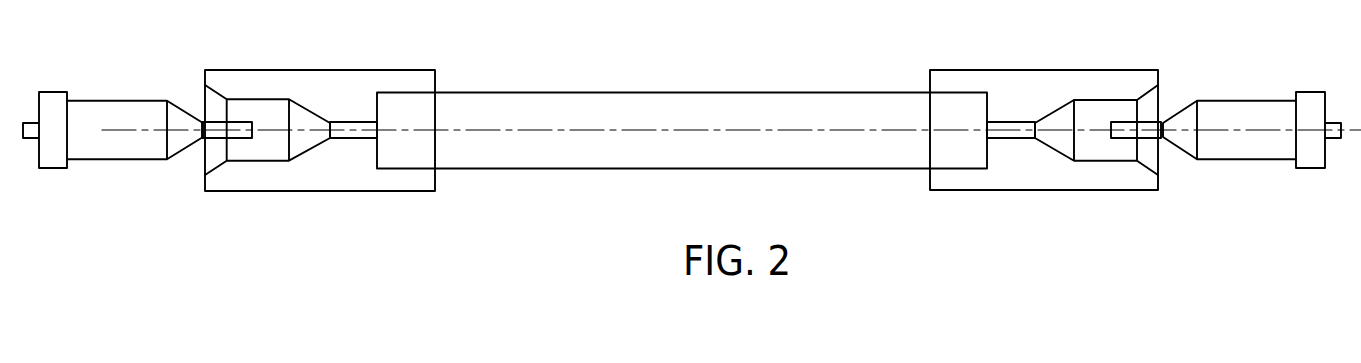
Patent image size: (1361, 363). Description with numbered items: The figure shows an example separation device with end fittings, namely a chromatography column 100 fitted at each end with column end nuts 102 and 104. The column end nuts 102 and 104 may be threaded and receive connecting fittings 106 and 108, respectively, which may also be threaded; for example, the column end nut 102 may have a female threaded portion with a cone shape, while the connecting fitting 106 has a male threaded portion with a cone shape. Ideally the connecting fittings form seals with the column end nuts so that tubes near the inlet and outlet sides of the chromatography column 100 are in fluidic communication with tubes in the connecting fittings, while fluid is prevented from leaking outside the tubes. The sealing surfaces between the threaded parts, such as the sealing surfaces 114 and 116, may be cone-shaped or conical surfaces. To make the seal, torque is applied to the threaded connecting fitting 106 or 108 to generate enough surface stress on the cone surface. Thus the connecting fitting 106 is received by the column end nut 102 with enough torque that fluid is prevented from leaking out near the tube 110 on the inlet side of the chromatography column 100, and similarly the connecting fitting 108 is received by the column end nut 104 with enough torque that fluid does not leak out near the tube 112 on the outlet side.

The chromatography column 100 is at (682, 92).
The column end nut 102 is at (320, 70).
The column end nut 104 is at (1043, 70).
The connecting fitting 106 is at (53, 92).
The connecting fitting 108 is at (1312, 92).
The tube 110 is at (357, 139).
The tube 112 is at (1010, 139).
The sealing surface 114 is at (185, 118).
The sealing surface 116 is at (304, 106).